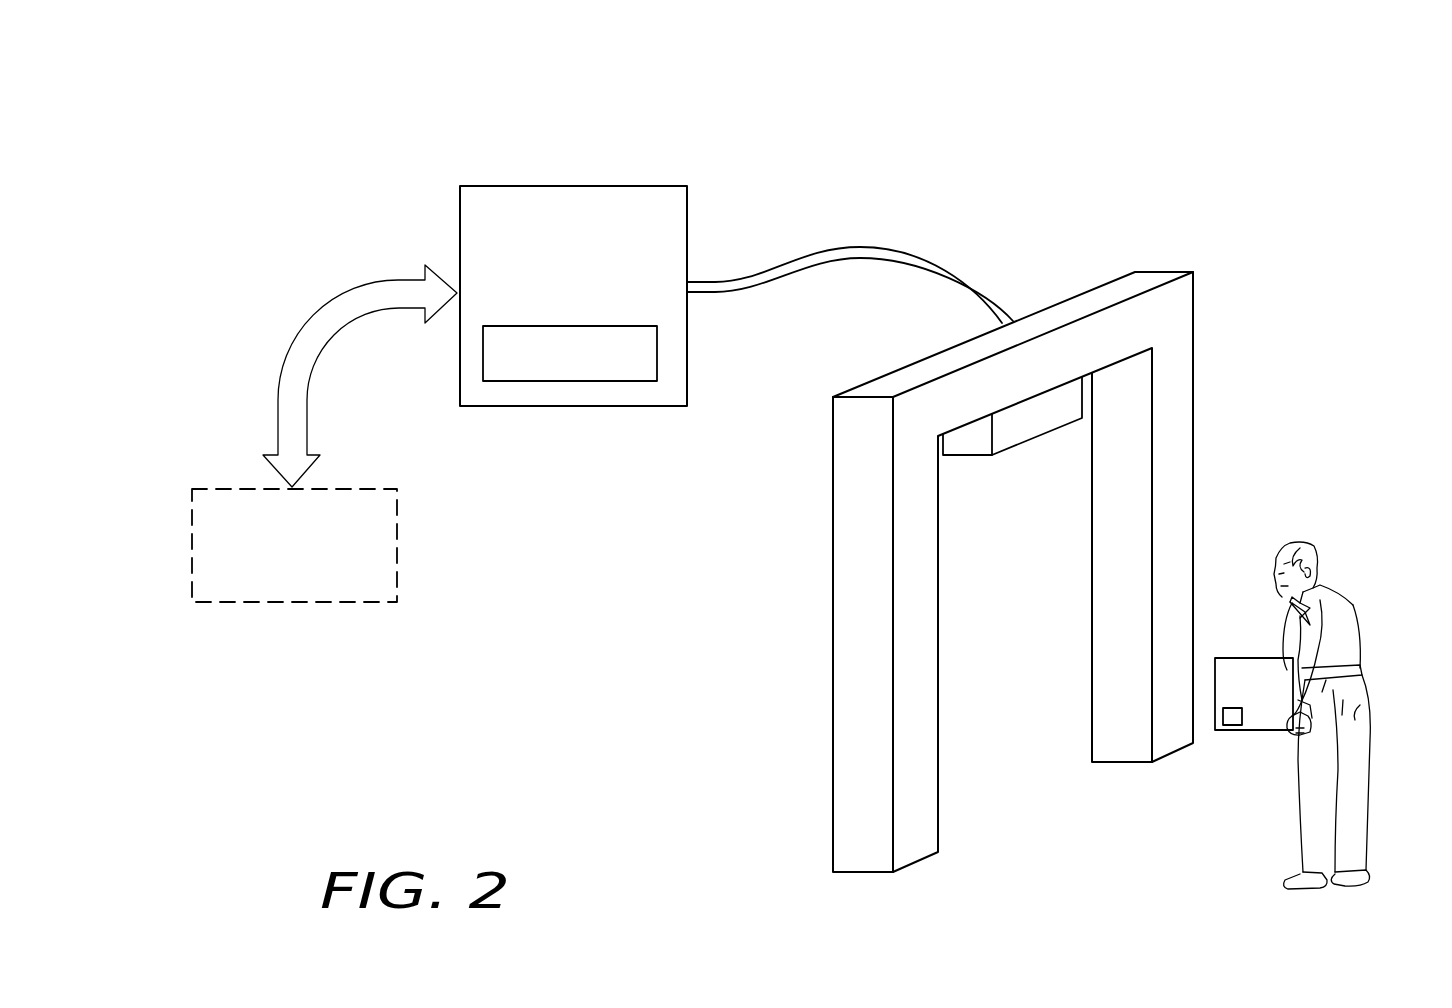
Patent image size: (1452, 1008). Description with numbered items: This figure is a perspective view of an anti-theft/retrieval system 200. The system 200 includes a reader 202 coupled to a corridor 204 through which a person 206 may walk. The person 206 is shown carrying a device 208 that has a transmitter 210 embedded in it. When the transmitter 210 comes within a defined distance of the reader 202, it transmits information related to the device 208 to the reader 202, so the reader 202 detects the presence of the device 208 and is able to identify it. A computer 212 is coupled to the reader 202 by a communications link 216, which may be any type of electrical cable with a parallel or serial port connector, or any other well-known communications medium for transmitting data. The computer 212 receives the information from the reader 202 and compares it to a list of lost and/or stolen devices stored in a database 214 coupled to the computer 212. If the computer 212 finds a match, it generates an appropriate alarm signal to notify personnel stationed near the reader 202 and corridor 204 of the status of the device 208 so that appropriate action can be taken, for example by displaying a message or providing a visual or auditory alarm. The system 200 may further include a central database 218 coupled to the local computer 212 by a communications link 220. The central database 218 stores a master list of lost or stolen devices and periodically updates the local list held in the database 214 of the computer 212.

The anti-theft/retrieval system 200 is at (1046, 94).
The reader 202 is at (1043, 417).
The corridor 204 is at (1145, 280).
The person 206 is at (1323, 590).
The device 208 is at (1232, 675).
The transmitter 210 is at (1233, 720).
The computer 212 is at (607, 202).
The database 214 is at (533, 381).
The communications link 216 is at (892, 252).
The central database 218 is at (228, 489).
The communications link 220 is at (307, 342).